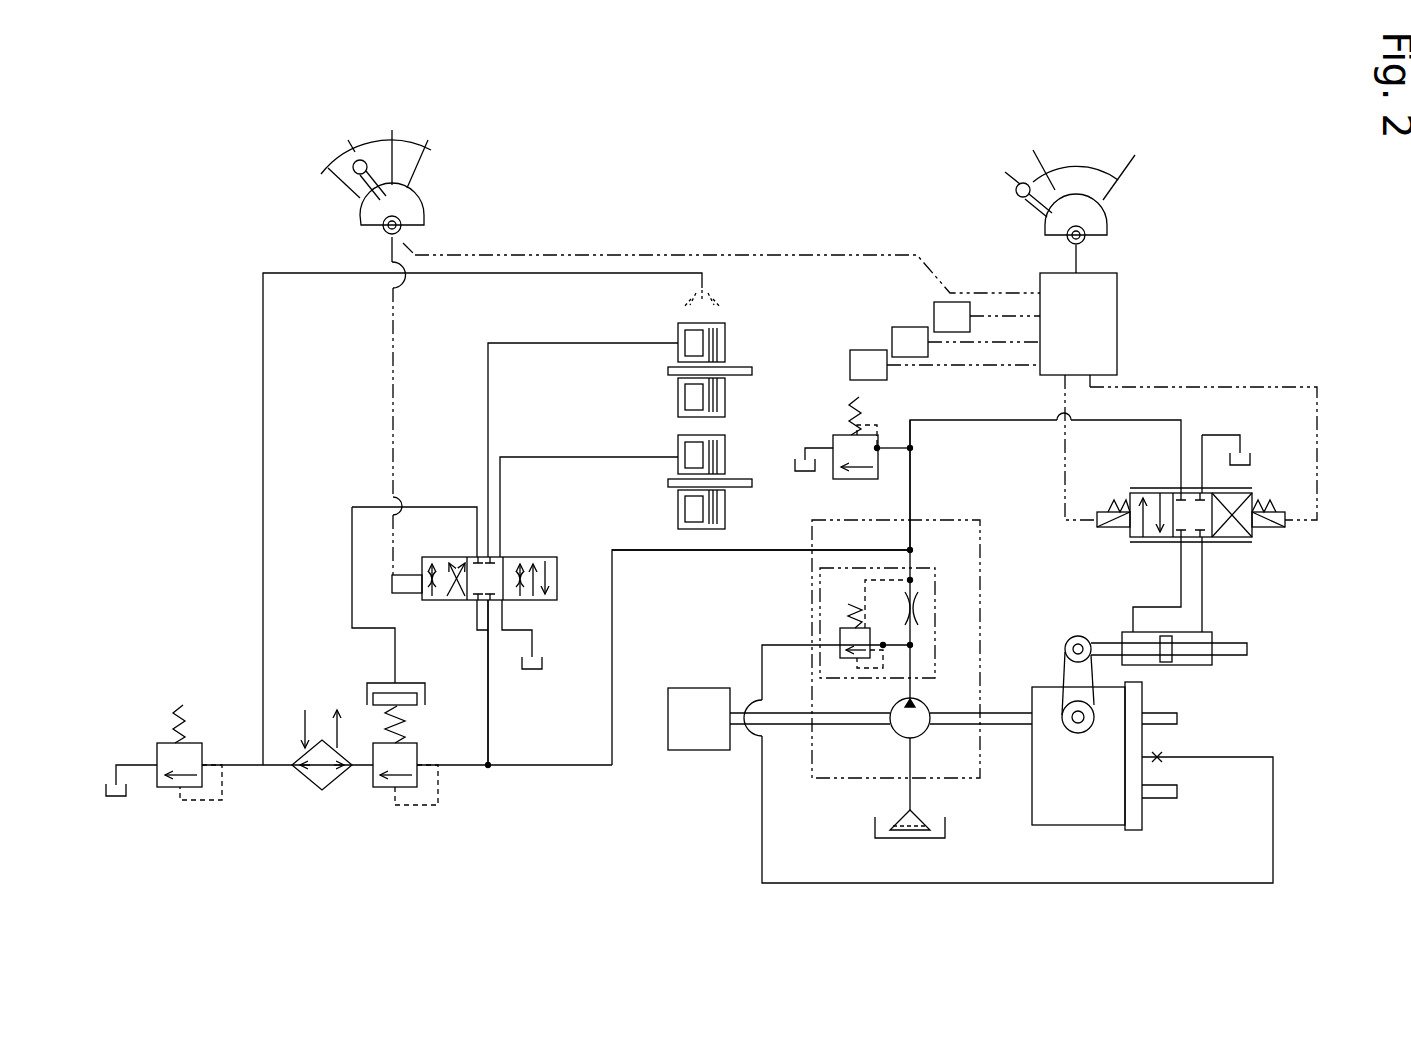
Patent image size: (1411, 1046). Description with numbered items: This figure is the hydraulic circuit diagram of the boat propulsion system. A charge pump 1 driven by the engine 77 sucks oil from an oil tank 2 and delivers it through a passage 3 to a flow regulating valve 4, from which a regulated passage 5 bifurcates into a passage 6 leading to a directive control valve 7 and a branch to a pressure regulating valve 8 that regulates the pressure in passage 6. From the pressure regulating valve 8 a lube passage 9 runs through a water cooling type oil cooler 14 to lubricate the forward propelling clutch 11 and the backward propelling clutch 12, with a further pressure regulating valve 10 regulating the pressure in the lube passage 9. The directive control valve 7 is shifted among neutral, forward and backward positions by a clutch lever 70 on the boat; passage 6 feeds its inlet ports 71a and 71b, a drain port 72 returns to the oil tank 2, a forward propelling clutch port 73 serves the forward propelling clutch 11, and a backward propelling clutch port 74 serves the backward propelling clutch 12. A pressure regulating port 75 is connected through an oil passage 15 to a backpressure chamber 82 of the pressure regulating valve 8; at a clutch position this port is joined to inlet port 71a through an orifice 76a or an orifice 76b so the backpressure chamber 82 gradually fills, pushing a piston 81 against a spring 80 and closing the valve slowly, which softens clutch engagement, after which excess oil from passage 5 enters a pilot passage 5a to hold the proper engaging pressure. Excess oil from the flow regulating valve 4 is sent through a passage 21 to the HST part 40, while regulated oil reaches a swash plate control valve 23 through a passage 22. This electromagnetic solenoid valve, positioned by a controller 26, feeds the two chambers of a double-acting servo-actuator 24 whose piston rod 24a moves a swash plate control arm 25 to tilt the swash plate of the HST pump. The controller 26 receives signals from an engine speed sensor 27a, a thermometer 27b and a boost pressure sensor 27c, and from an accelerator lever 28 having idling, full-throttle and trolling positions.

The charge pump 1 is at (928, 745).
The oil tank 2 is at (1262, 460).
The passage 3 is at (920, 695).
The flow regulating valve 4 is at (931, 699).
The passage 5 is at (745, 553).
The pilot passage 5a is at (420, 818).
The passage 6 is at (490, 705).
The directive control valve 7 is at (531, 556).
The pressure regulating valve 8 is at (378, 796).
The lube passage 9 is at (352, 772).
The pressure regulating valve 10 is at (215, 730).
The forward propelling clutch 11 is at (740, 452).
The backward propelling clutch 12 is at (740, 332).
The oil cooler 14 is at (288, 782).
The oil passage 15 is at (352, 560).
The passage 21 is at (815, 883).
The passage 22 is at (975, 423).
The swash plate control valve 23 is at (1265, 548).
The servo-actuator 24 is at (1206, 673).
The piston rod 24a is at (1235, 642).
The swash plate control arm 25 is at (1055, 672).
The controller 26 is at (1132, 316).
The engine speed sensor 27a is at (934, 312).
The thermometer 27b is at (892, 340).
The boost pressure sensor 27c is at (850, 362).
The accelerator lever 28 is at (1010, 198).
The HST part 40 is at (1158, 818).
The clutch lever 70 is at (340, 200).
The inlet port 71a is at (470, 604).
The inlet port 71b is at (483, 604).
The drain port 72 is at (507, 604).
The forward propelling clutch port 73 is at (507, 553).
The backward propelling clutch port 74 is at (492, 548).
The pressure regulating port 75 is at (465, 553).
The orifice 76a is at (420, 580).
The orifice 76b is at (557, 578).
The engine 77 is at (692, 680).
The spring 80 is at (412, 727).
The piston 81 is at (410, 705).
The backpressure chamber 82 is at (367, 690).